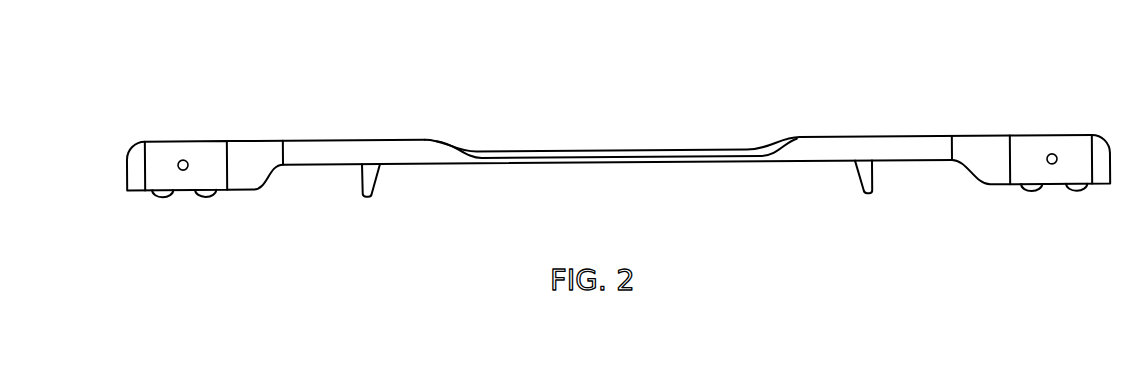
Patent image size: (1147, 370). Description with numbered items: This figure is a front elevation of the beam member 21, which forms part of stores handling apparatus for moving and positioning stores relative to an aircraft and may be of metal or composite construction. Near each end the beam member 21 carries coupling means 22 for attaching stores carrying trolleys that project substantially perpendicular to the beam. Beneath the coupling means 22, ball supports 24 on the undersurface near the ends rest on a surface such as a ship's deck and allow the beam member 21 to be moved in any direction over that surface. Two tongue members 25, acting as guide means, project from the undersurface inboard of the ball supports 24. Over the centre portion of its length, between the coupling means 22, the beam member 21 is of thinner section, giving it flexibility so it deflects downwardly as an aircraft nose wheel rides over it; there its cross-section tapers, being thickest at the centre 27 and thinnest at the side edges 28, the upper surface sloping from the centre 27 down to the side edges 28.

The beam member 21 is at (837, 135).
The coupling means 22 is at (180, 162).
The ball supports 24 is at (205, 197).
The tongue members 25 is at (361, 188).
The centre of the section 27 is at (548, 150).
The side edges 28 is at (618, 159).